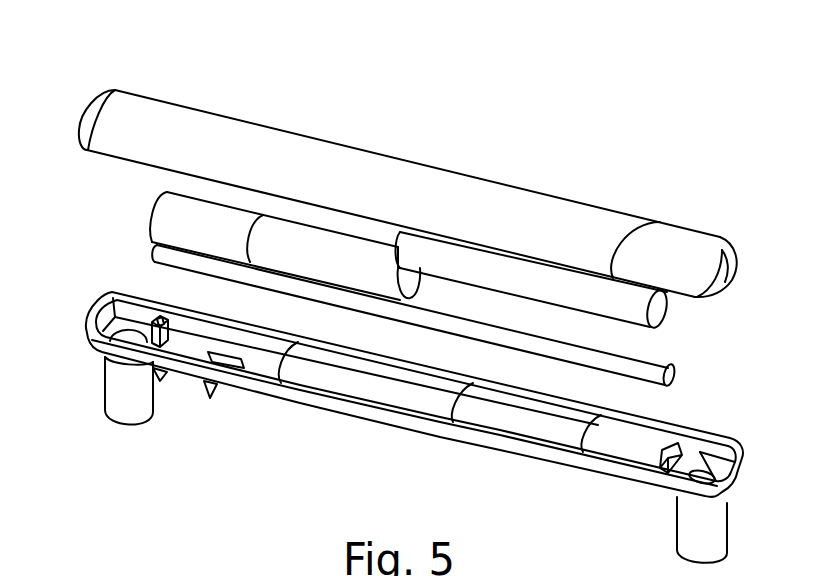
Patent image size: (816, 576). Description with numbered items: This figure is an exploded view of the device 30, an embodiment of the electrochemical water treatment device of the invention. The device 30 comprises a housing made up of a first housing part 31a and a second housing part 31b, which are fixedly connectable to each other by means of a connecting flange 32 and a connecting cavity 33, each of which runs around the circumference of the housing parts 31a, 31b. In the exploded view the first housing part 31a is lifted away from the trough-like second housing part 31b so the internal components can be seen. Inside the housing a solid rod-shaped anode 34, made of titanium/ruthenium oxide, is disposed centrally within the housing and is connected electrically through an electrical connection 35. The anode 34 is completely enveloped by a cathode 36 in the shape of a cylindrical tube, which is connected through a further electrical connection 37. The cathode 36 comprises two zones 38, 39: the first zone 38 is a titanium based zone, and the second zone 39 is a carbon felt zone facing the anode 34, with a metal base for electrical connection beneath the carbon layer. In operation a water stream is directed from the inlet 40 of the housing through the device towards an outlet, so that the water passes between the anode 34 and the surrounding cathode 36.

The device 30 is at (604, 108).
The first housing part 31a is at (687, 243).
The second housing part 31b is at (382, 427).
The connecting flange 32 is at (417, 193).
The connecting cavity 33 is at (395, 412).
The rod-shaped anode 34 is at (643, 370).
The electrical connection 35 is at (160, 382).
The cathode 36 is at (462, 48).
The electrical connection 37 is at (215, 395).
The first zone 38 is at (370, 253).
The second zone 39 is at (435, 253).
The inlet 40 is at (115, 393).